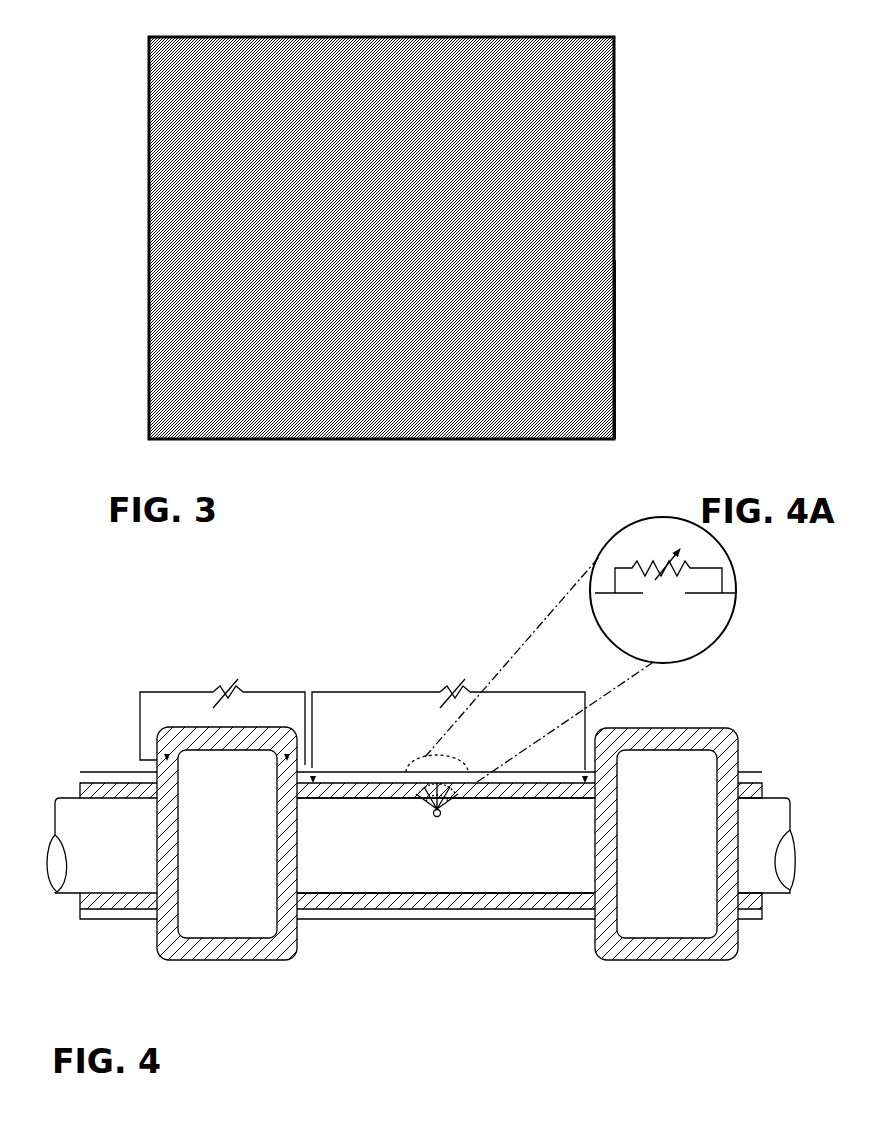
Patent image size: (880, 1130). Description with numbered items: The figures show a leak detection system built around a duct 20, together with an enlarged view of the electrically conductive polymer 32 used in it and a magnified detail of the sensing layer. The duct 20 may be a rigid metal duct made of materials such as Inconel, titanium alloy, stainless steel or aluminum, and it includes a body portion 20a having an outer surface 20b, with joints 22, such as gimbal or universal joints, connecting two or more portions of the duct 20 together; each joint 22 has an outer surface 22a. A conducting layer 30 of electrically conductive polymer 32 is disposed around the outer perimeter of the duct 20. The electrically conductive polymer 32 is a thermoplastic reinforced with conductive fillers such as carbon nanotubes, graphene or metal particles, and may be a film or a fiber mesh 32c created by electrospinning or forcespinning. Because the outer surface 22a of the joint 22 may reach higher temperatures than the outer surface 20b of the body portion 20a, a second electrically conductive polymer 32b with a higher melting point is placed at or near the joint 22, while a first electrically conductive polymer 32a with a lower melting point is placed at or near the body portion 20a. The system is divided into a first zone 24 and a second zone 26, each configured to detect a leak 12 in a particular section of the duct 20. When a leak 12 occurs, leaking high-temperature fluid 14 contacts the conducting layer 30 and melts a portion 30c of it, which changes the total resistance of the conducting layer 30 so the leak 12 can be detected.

In FIG. 4, the leak 12 is at (433, 821).
In FIG. 4, the leaking high-temperature fluid 14 is at (462, 806).
In FIG. 4, the duct 20 is at (770, 833).
In FIG. 4, the body portion 20a is at (397, 878).
In FIG. 4, the outer surface of body portion 20b is at (55, 893).
In FIG. 4, the joint 22 is at (198, 832).
In FIG. 4, the outer surface of joint 22a is at (692, 740).
In FIG. 4, the first zone 24 is at (181, 681).
In FIG. 4, the second zone 26 is at (350, 684).
In FIG. 4, the conducting layer 30 is at (118, 768).
In FIG. 4A, the conducting layer 30 is at (738, 588).
In FIG. 4A, the melted portion of conducting layer 30c is at (696, 584).
In FIG. 3, the electrically conductive polymer 32 is at (637, 96).
In FIG. 4, the first electrically conductive polymer 32a is at (560, 768).
In FIG. 4, the second electrically conductive polymer 32b is at (168, 726).
In FIG. 3, the fiber mesh 32c is at (617, 299).